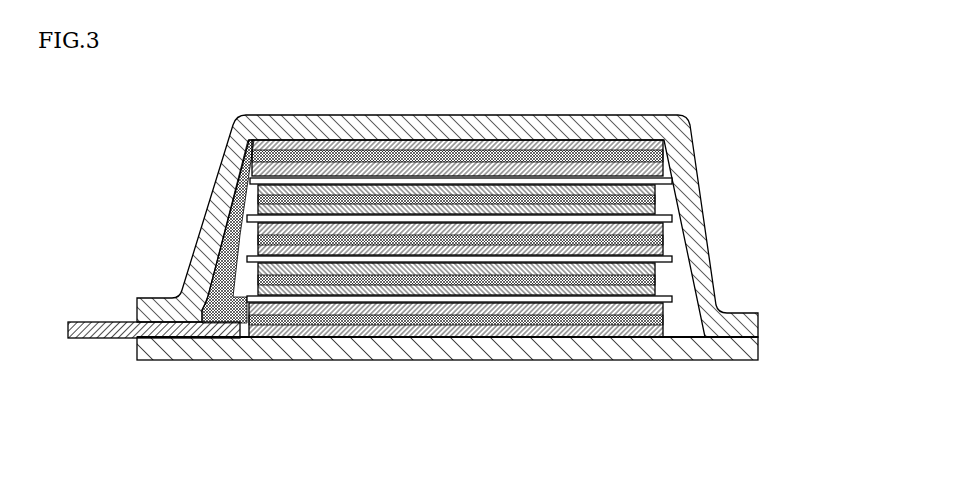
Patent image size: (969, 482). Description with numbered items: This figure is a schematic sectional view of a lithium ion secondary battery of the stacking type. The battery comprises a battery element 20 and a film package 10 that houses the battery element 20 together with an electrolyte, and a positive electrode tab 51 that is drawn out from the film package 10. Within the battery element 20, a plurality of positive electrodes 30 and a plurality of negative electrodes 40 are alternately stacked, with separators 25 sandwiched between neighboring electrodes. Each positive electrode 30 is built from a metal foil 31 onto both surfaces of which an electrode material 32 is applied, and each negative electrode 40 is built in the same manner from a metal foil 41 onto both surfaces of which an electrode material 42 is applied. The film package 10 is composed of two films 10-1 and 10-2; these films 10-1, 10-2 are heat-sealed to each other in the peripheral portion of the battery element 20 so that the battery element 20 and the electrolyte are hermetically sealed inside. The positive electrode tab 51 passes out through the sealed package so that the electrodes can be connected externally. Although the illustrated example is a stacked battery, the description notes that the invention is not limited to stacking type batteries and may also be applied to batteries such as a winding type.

The film package 10 is at (497, 263).
The film 10-1 is at (743, 313).
The film 10-2 is at (473, 372).
The battery element 20 is at (335, 340).
The separator 25 is at (617, 262).
The positive electrode 30 is at (253, 194).
The metal foil 31 is at (443, 188).
The electrode material 32 is at (488, 208).
The negative electrode 40 is at (509, 244).
The metal foil 41 is at (530, 167).
The electrode material 42 is at (585, 172).
The positive electrode tab 51 is at (100, 322).